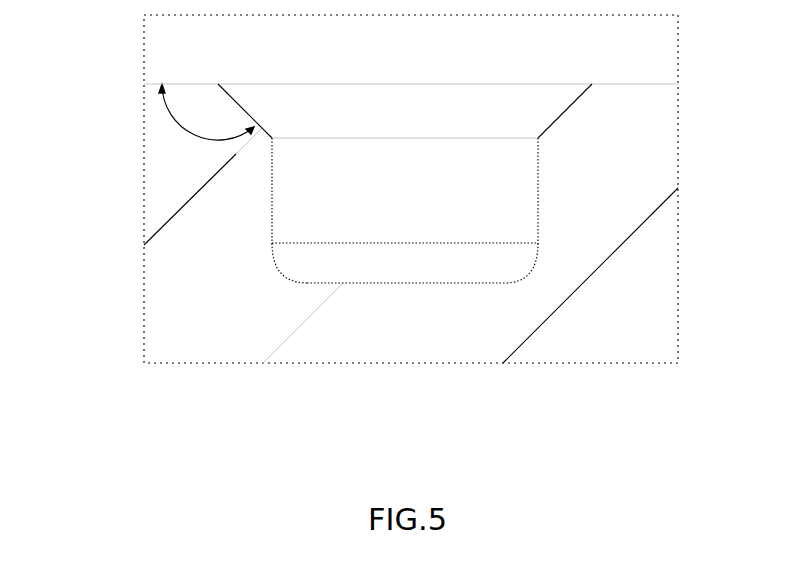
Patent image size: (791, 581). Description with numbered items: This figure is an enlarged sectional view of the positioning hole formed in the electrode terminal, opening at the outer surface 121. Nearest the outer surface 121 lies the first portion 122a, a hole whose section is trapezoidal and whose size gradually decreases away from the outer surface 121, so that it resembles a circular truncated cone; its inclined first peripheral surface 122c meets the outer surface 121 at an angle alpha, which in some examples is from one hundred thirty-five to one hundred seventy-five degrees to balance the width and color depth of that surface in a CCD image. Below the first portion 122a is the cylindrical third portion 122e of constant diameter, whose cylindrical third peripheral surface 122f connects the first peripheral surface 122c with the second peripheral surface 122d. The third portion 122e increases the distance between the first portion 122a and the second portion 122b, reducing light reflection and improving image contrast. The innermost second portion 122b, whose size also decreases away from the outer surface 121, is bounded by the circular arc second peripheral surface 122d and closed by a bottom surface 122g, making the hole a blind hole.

The outer surface 121 is at (185, 84).
The first portion 122a is at (412, 100).
The second portion 122b is at (522, 262).
The first peripheral surface 122c is at (248, 110).
The second peripheral surface 122d is at (285, 273).
The third portion 122e is at (518, 202).
The third peripheral surface 122f is at (272, 182).
The bottom surface 122g is at (405, 283).